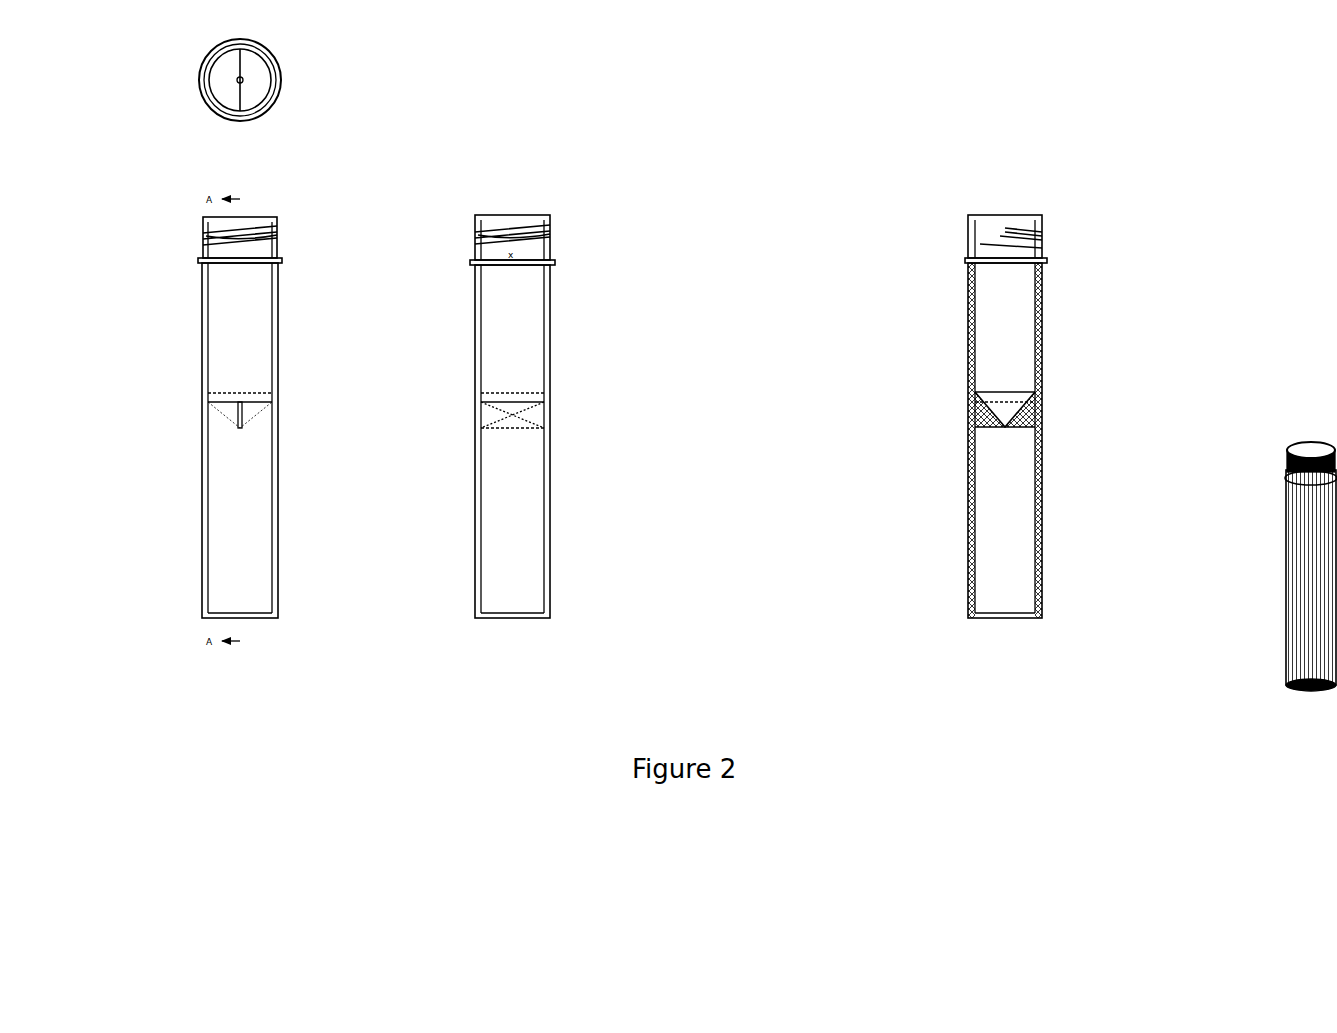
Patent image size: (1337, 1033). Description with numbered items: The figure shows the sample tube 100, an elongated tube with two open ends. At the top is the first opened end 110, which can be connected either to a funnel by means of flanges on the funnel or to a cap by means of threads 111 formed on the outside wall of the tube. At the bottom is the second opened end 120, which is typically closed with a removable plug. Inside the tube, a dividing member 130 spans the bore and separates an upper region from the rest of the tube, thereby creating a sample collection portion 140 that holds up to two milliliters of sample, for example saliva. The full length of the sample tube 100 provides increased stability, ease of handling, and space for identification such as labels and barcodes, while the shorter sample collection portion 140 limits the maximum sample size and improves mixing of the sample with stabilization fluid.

The sample tube 100 is at (726, 426).
The first opened end 110 is at (279, 212).
The threads 111 is at (279, 229).
The second opened end 120 is at (263, 631).
The dividing member 130 is at (283, 393).
The sample collection portion 140 is at (300, 282).